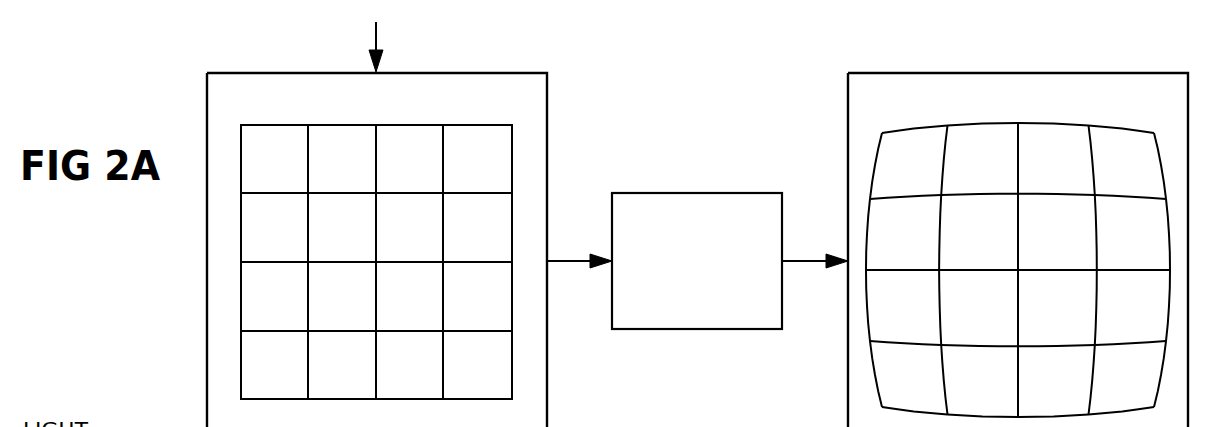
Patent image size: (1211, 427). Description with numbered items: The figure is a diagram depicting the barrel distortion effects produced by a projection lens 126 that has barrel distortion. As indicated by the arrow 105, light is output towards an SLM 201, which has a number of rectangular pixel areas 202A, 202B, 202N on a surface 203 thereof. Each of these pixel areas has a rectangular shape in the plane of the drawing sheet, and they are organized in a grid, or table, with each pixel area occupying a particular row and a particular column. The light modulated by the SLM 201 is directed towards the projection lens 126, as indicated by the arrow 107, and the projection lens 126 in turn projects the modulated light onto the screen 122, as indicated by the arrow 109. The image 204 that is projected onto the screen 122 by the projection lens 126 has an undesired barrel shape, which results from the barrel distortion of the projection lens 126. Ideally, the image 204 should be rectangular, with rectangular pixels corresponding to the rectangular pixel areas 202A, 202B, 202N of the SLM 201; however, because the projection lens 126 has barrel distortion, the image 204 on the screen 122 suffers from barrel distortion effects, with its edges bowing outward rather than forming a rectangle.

The SLM 201 is at (322, 72).
The arrow 105 is at (377, 33).
The surface 203 is at (537, 103).
The pixel area 202A is at (297, 168).
The pixel area 202B is at (365, 168).
The pixel area 202N is at (500, 375).
The arrow 107 is at (587, 261).
The projection lens 126 is at (679, 298).
The arrow 109 is at (823, 261).
The screen 122 is at (1177, 105).
The image 204 is at (997, 123).